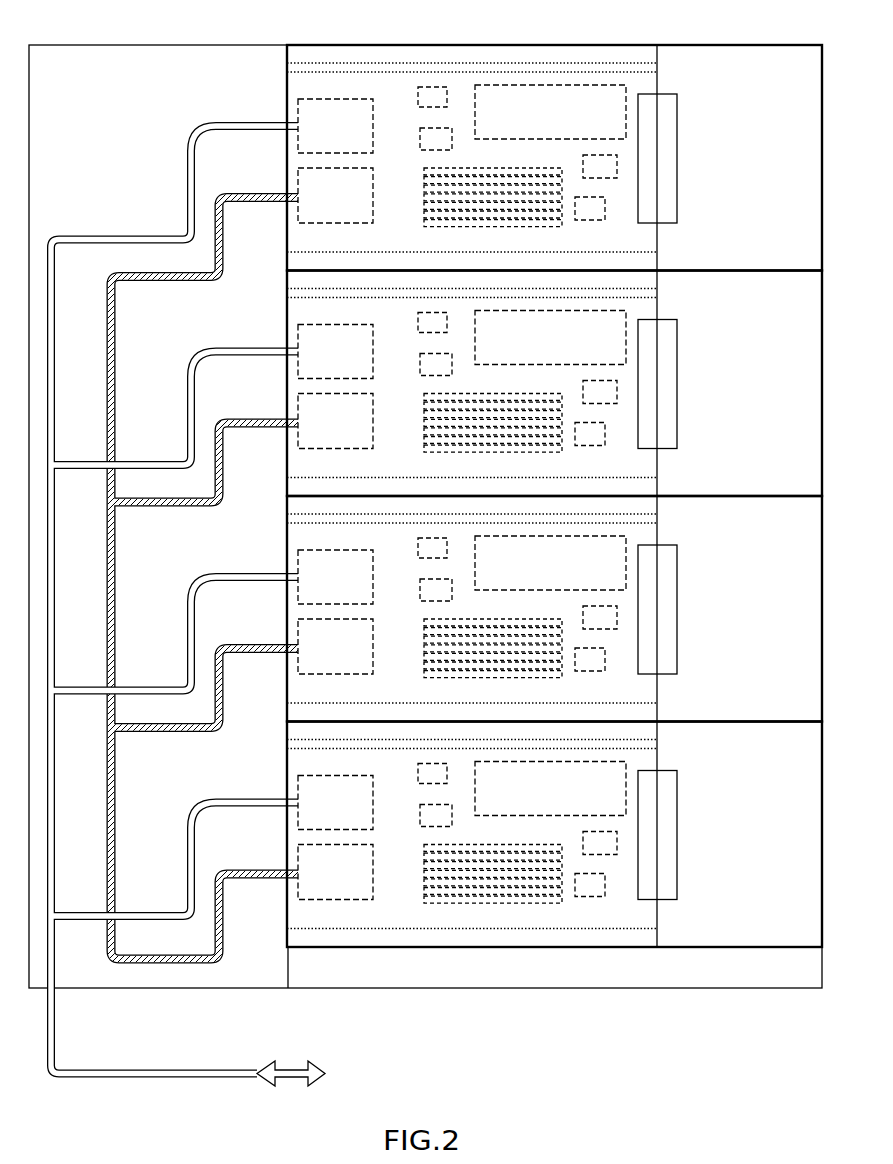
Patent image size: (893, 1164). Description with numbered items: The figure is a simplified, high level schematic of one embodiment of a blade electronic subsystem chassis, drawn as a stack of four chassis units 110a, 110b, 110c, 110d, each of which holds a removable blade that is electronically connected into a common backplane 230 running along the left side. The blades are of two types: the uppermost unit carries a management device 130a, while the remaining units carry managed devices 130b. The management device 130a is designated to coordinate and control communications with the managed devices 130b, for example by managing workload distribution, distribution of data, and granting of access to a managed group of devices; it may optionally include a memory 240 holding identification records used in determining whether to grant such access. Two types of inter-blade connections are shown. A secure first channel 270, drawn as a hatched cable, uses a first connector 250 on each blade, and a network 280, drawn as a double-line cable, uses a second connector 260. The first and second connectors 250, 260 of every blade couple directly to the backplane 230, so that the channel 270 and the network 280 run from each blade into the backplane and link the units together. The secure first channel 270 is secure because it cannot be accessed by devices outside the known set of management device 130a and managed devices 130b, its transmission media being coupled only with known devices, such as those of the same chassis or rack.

The backplane 230 is at (132, 122).
The memory 240 is at (438, 96).
The first connector 250 is at (361, 872).
The second connector 260 is at (361, 802).
The secure first channel 270 is at (274, 868).
The network 280 is at (223, 798).
The electronic subsystem chassis 110a is at (760, 122).
The electronic subsystem chassis 110b is at (775, 347).
The electronic subsystem chassis 110c is at (783, 564).
The electronic subsystem chassis 110d is at (782, 807).
The management device 130a is at (632, 245).
The managed device 130b is at (645, 921).